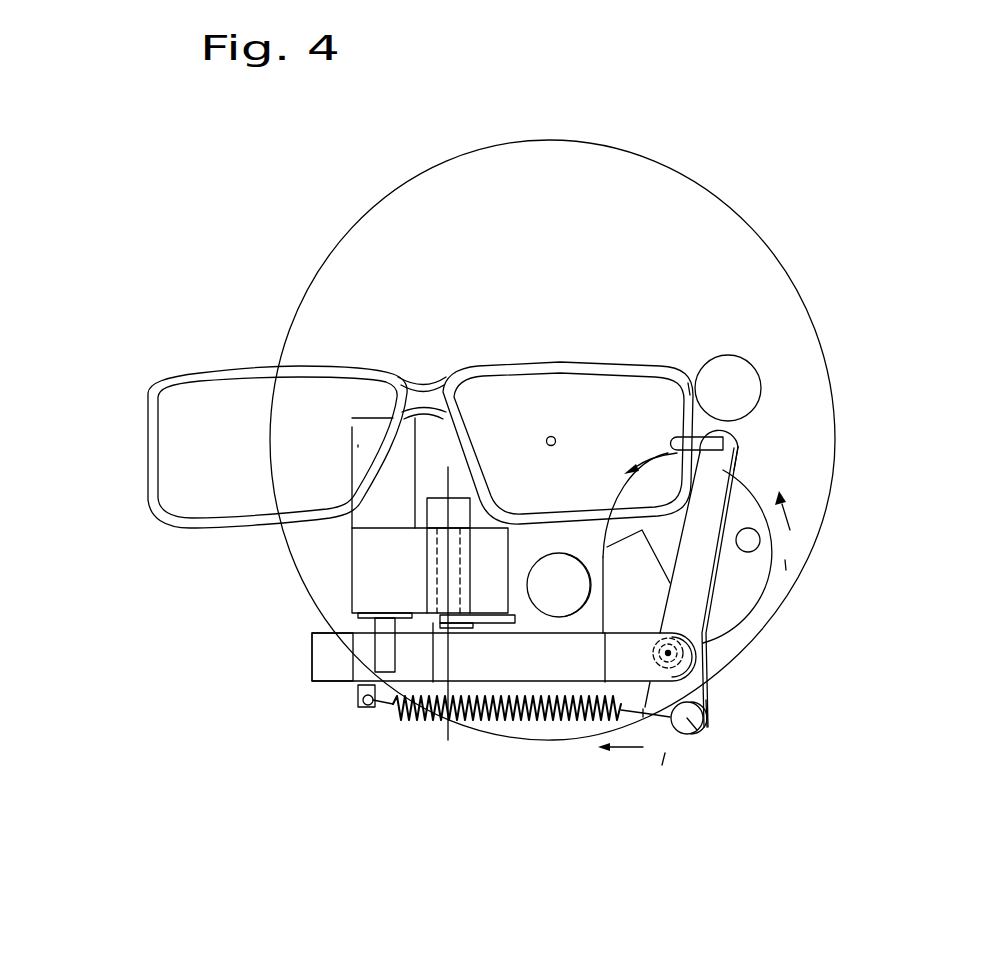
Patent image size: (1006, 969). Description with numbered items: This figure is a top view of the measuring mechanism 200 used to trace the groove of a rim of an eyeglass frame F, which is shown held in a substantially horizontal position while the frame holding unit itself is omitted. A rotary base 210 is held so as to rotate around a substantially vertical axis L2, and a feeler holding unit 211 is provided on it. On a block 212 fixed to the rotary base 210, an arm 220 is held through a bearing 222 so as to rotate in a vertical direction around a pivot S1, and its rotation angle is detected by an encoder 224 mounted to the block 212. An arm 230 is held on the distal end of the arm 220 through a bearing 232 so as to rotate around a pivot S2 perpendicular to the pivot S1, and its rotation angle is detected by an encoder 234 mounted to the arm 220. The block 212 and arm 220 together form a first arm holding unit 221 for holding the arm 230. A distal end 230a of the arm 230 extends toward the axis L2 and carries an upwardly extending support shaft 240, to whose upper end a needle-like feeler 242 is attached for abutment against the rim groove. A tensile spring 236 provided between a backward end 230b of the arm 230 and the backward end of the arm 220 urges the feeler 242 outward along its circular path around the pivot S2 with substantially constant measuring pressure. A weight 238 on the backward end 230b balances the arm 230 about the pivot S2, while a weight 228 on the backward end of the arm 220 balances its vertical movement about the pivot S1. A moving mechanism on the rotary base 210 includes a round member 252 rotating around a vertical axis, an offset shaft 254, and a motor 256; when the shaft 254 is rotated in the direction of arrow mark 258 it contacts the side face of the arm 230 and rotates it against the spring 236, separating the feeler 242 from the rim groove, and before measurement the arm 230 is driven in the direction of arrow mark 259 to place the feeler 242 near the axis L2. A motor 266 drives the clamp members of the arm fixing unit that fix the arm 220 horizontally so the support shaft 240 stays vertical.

The measuring mechanism 200 is at (820, 177).
The rotary base 210 is at (547, 157).
The feeler holding unit 211 is at (664, 760).
The block 212 is at (313, 607).
The arm 220 is at (530, 678).
The first arm holding unit 221 is at (284, 642).
The bearing 222 is at (428, 562).
The encoder 224 is at (475, 485).
The weight 228 is at (340, 670).
The arm 230 is at (752, 582).
The distal end 230a is at (733, 458).
The backward end 230b is at (712, 660).
The bearing 232 is at (785, 560).
The encoder 234 is at (543, 553).
The spring 236 is at (533, 657).
The weight 238 is at (705, 733).
The support shaft 240 is at (740, 423).
The feeler 242 is at (688, 383).
The round member 252 is at (770, 555).
The shaft 254 is at (752, 541).
The motor 256 is at (737, 368).
The arrow mark 258 is at (790, 522).
The arrow mark 259 is at (654, 455).
The motor 266 is at (358, 445).
The frame F is at (152, 433).
The axis L2 is at (550, 436).
The pivot S1 is at (543, 762).
The pivot S2 is at (745, 600).